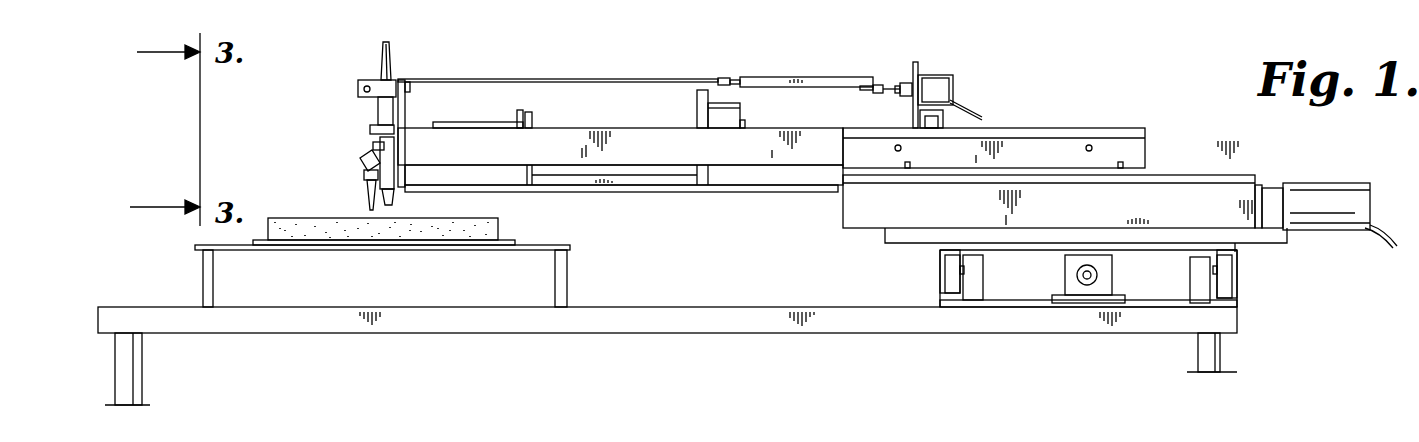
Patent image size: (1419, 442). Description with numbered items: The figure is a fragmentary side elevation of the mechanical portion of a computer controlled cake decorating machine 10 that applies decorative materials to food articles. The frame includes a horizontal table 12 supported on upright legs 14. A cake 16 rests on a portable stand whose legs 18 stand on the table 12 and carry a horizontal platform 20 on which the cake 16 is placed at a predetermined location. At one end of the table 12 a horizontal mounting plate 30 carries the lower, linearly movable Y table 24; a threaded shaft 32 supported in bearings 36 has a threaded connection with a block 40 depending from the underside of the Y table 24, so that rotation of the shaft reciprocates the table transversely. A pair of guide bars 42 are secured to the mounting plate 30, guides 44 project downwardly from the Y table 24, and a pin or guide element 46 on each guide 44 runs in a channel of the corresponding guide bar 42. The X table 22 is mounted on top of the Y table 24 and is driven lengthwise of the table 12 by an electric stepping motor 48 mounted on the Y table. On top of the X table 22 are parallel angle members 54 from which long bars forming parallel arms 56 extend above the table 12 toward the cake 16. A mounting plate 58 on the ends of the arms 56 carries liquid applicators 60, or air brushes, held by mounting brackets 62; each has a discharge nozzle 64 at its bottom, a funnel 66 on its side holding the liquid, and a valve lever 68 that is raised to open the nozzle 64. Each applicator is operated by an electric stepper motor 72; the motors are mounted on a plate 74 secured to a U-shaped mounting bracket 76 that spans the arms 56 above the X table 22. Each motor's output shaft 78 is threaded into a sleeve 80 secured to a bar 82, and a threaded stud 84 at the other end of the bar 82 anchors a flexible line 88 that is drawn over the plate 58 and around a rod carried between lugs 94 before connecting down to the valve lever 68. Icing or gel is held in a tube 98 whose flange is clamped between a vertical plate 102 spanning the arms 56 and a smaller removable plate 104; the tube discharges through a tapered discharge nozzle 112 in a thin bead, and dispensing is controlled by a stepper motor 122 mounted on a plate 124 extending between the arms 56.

The cake decorating machine 10 is at (1150, 92).
The horizontal table 12 is at (780, 315).
The upright legs 14 is at (133, 368).
The cake 16 is at (495, 224).
The legs 18 is at (203, 268).
The horizontal platform 20 is at (240, 250).
The X table 22 is at (1208, 175).
The Y table 24 is at (938, 236).
The horizontal mounting plate 30 is at (1143, 305).
The threaded shaft 32 is at (1080, 272).
The bearings 36 is at (1098, 276).
The block 40 is at (1067, 283).
The guide bars 42 is at (978, 295).
The guides 44 is at (945, 263).
The guide element 46 is at (962, 272).
The electric stepping motor 48 is at (1357, 190).
The angle members 54 is at (1135, 150).
The arms 56 is at (798, 135).
The mounting plate 58 is at (406, 106).
The liquid applicators 60 is at (390, 60).
The mounting brackets 62 is at (372, 128).
The discharge nozzle 64 is at (395, 195).
The funnel 66 is at (362, 162).
The valve lever 68 is at (373, 147).
The electric stepper motor 72 is at (950, 83).
The plate 74 is at (918, 65).
The U-shaped mounting bracket 76 is at (925, 129).
The output shaft 78 is at (896, 84).
The sleeve 80 is at (877, 94).
The bar 82 is at (845, 78).
The threaded stud 84 is at (722, 76).
The flexible line 88 is at (658, 78).
The lugs 94 is at (375, 83).
The tube 98 is at (480, 127).
The vertical plate 102 is at (533, 115).
The smaller plate 104 is at (520, 108).
The tapered discharge nozzle 112 is at (368, 200).
The stepper motor 122 is at (742, 113).
The plate 124 is at (697, 102).